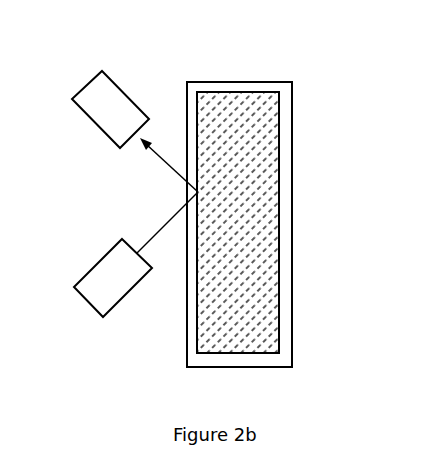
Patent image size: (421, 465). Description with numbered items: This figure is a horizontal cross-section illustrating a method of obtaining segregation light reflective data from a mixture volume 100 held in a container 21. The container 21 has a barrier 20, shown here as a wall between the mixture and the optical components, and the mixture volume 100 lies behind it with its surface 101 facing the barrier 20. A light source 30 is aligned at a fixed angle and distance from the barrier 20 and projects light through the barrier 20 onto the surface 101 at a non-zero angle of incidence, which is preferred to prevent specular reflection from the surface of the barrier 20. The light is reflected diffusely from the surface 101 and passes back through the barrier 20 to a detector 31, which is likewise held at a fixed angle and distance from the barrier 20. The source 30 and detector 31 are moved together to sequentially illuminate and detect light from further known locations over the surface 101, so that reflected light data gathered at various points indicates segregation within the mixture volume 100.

The barrier 20 is at (187, 82).
The container 21 is at (240, 82).
The mixture volume 100 is at (278, 147).
The surface 101 is at (194, 292).
The light source 30 is at (93, 267).
The detector 31 is at (92, 78).